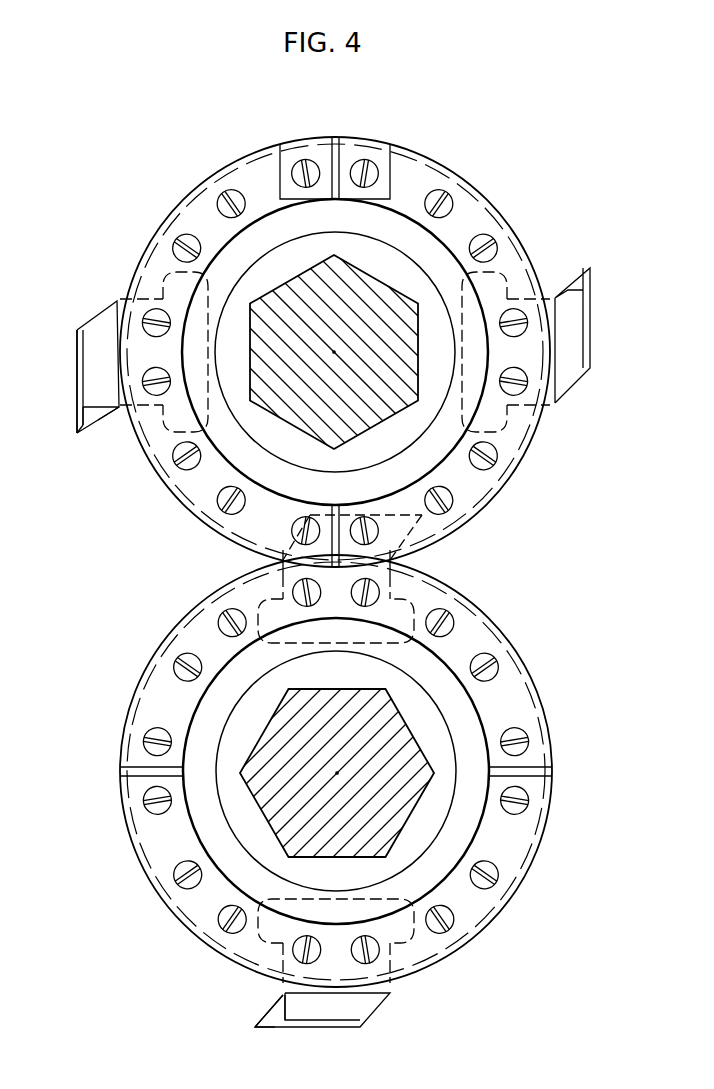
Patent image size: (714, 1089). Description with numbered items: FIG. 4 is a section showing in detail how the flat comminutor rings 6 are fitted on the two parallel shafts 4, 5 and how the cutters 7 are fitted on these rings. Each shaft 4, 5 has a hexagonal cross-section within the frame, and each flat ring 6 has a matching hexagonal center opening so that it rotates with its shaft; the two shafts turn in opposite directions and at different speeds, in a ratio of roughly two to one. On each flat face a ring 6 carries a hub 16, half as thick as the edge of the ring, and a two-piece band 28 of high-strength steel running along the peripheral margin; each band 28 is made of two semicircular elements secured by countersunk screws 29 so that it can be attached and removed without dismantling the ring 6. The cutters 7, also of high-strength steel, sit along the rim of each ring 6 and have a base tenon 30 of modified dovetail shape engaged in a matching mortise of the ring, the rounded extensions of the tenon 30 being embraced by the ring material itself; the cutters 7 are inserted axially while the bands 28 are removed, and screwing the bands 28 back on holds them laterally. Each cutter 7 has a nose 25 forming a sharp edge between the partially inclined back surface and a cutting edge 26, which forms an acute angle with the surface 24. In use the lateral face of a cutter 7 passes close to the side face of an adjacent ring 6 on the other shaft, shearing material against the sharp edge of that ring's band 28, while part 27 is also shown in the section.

The shaft 4 is at (365, 292).
The shaft 5 is at (373, 738).
The flat comminutor ring 6 is at (288, 215).
The cutter 7 is at (102, 378).
The hub 16 is at (420, 275).
The surface 24 is at (80, 358).
The nose 25 is at (80, 433).
The cutting edge 26 is at (107, 417).
The tab edge 27 is at (88, 417).
The band 28 is at (257, 187).
The countersunk screw 29 is at (191, 238).
The base tenon 30 is at (195, 317).